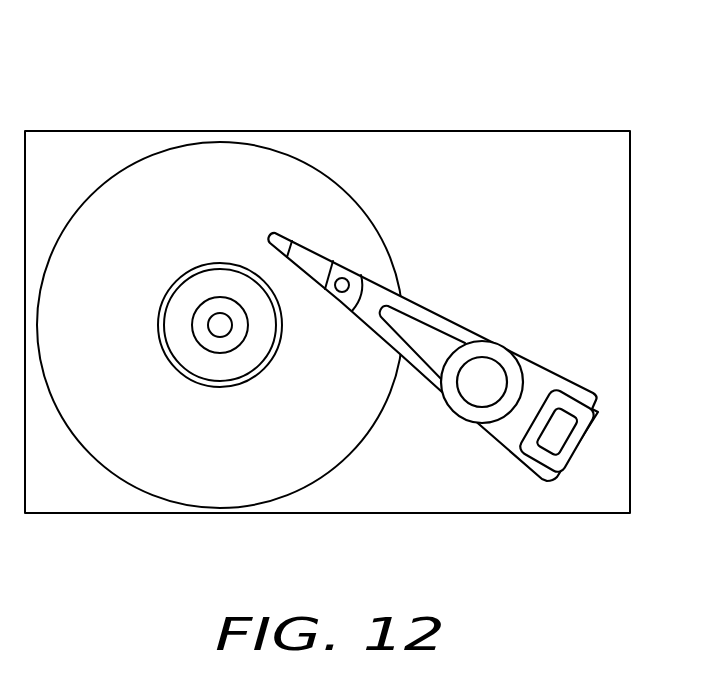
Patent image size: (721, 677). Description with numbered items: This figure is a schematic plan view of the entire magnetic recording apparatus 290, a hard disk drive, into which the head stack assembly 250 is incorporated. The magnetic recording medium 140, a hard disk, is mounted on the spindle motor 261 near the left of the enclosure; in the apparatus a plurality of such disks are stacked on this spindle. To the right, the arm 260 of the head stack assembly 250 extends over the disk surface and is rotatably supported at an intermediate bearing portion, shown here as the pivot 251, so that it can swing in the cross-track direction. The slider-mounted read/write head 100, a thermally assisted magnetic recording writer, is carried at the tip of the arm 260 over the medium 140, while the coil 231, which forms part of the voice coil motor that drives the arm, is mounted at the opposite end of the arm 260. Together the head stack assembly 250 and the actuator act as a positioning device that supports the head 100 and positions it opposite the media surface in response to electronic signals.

The magnetic recording apparatus 290 is at (362, 120).
The read/write head 100 is at (284, 237).
The actuator pivot 251 is at (492, 341).
The medium 140 is at (150, 498).
The spindle motor 261 is at (221, 332).
The arm 260 is at (425, 380).
The head stack assembly 250 is at (436, 324).
The coil 231 is at (583, 451).